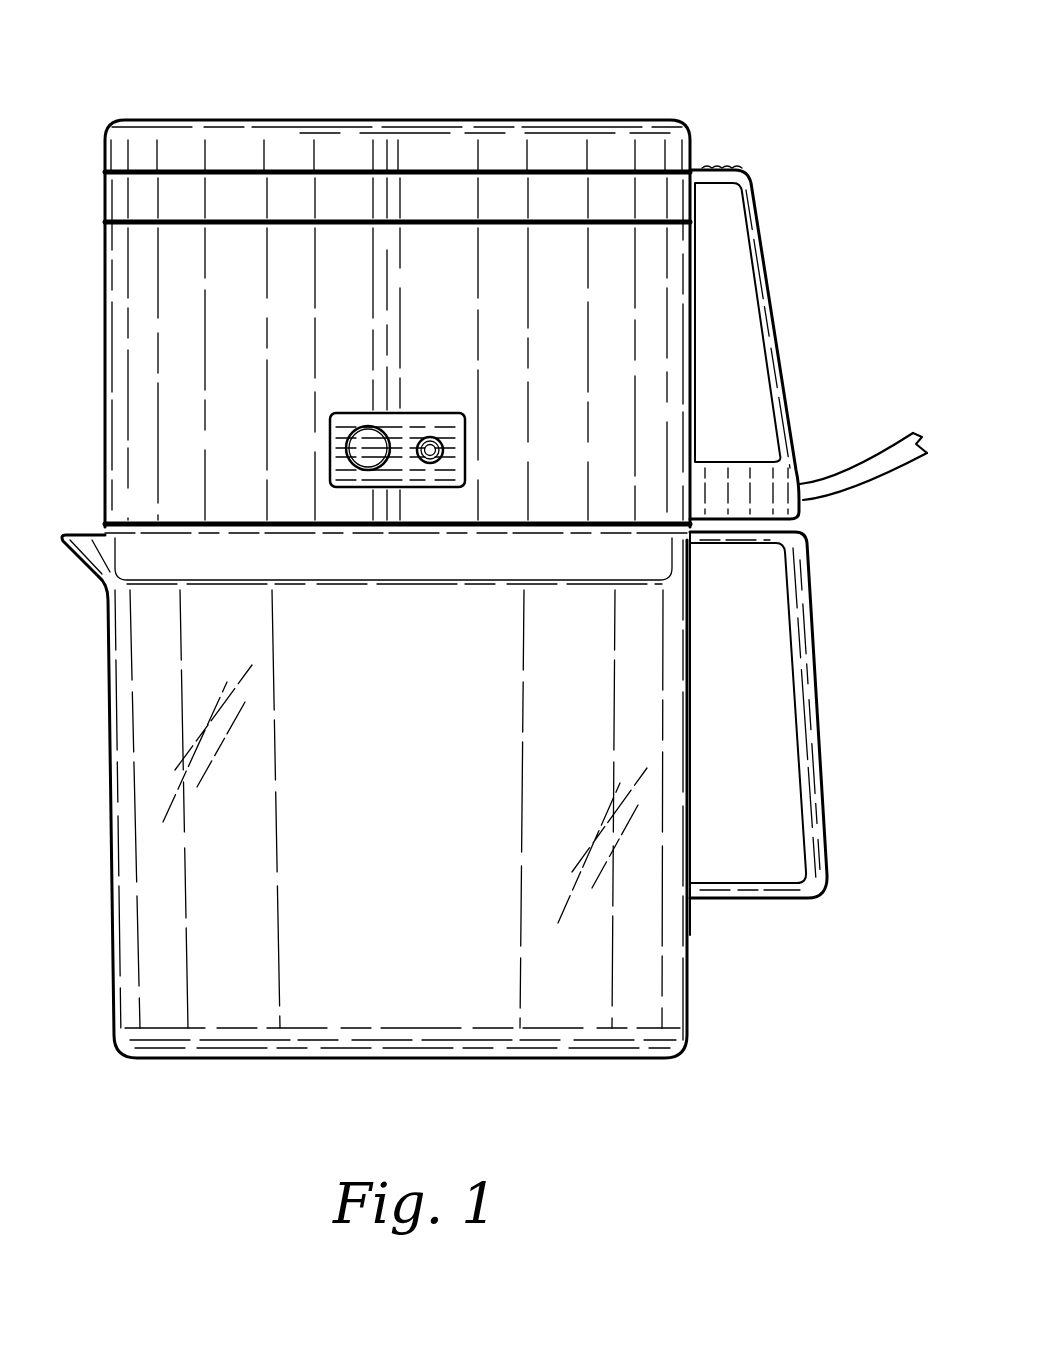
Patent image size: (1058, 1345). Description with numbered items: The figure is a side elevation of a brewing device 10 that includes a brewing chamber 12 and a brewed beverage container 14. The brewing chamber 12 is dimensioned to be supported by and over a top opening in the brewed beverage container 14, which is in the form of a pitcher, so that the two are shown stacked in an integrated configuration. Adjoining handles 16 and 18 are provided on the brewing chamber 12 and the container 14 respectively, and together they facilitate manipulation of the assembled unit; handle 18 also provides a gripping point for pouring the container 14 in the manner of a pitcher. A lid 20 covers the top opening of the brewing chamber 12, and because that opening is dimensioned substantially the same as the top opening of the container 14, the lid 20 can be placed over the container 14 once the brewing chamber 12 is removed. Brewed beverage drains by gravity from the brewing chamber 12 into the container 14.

The brewing device 10 is at (474, 78).
The brewing chamber 12 is at (147, 323).
The brewed beverage container 14 is at (172, 860).
The handle 16 is at (778, 327).
The handle 18 is at (812, 738).
The lid 20 is at (327, 130).